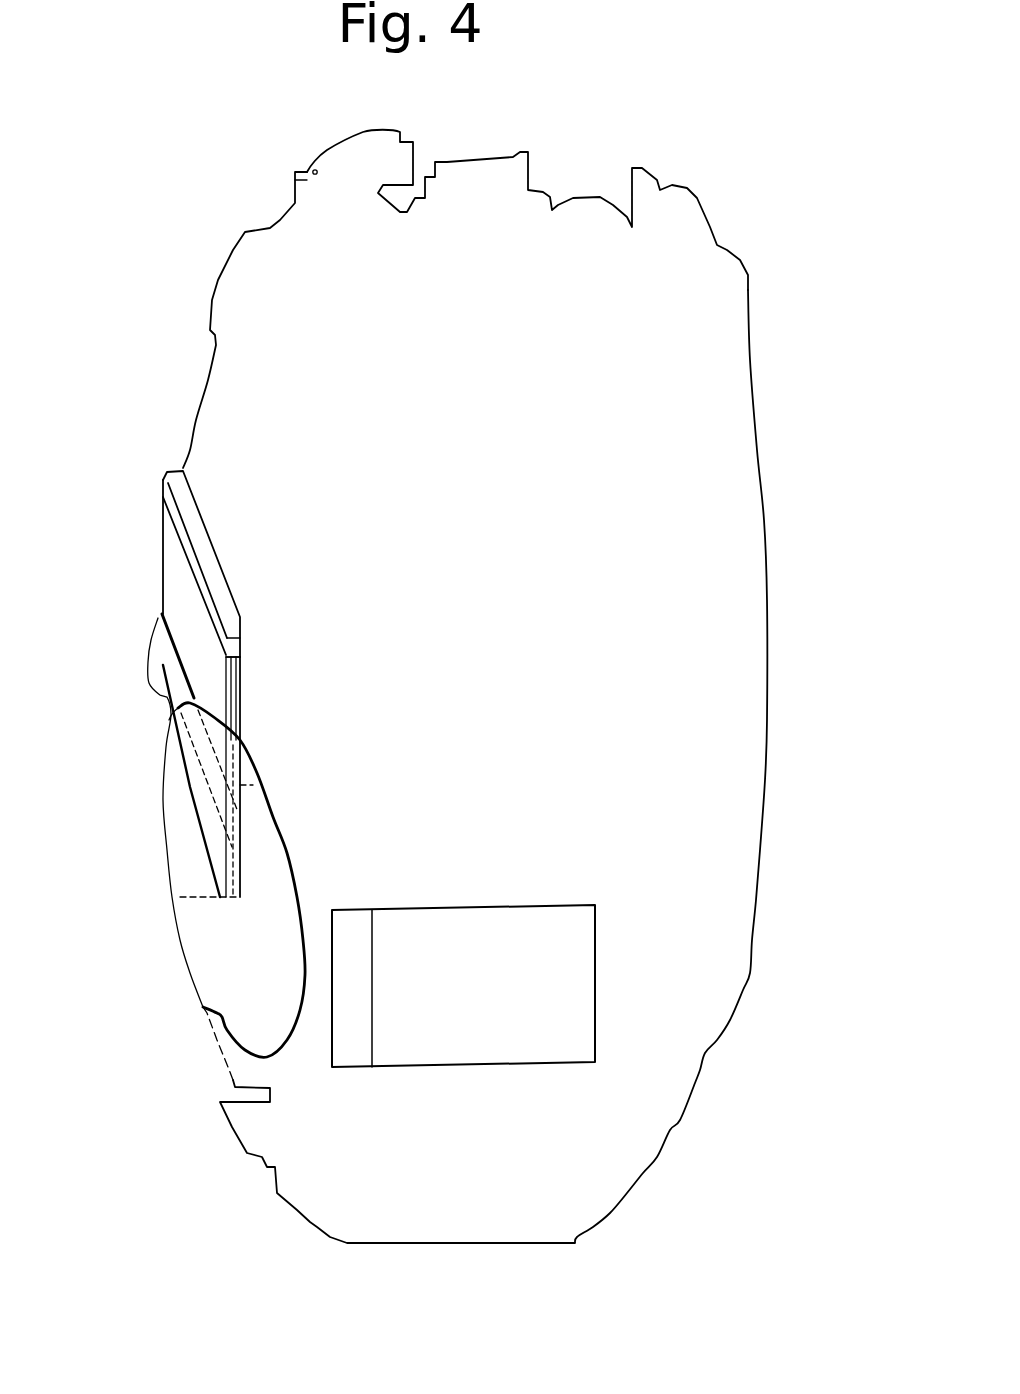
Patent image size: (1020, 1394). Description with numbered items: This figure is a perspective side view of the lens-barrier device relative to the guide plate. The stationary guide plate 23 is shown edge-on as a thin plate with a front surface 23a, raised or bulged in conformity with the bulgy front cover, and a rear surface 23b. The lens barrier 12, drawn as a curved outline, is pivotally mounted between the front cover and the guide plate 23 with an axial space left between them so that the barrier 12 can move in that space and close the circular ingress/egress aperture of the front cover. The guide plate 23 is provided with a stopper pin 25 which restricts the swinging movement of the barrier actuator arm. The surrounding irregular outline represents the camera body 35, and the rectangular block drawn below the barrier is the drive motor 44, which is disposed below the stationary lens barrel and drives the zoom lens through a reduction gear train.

The lens barrier 12 is at (274, 819).
The stationary guide plate 23 is at (218, 558).
The front surface 23a is at (178, 582).
The rear surface 23b is at (240, 873).
The stopper pin 25 is at (257, 757).
The camera body 35 is at (310, 1222).
The drive motor 44 is at (453, 1048).